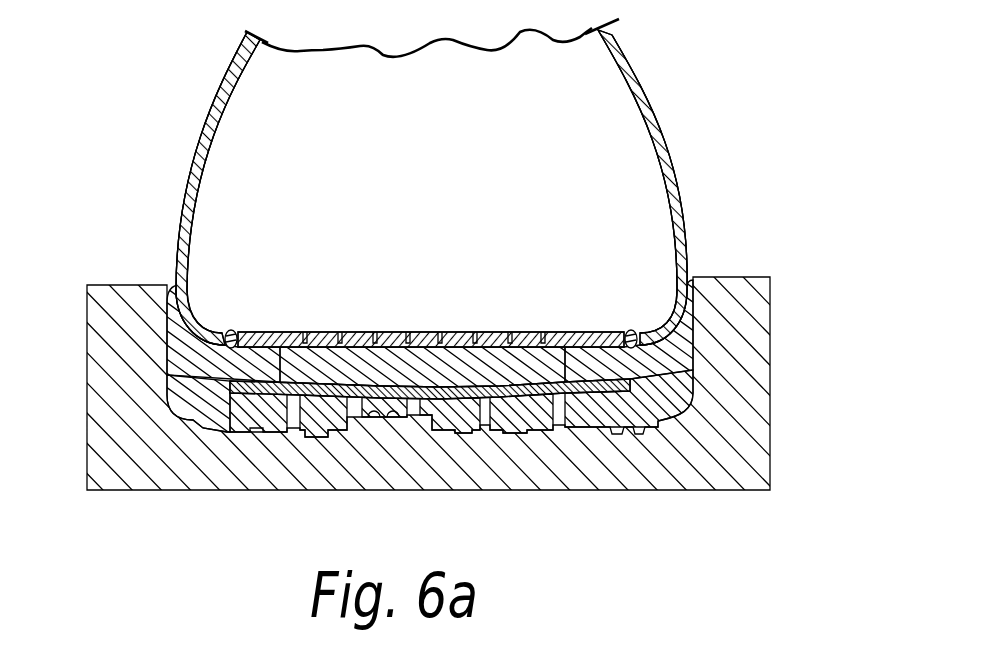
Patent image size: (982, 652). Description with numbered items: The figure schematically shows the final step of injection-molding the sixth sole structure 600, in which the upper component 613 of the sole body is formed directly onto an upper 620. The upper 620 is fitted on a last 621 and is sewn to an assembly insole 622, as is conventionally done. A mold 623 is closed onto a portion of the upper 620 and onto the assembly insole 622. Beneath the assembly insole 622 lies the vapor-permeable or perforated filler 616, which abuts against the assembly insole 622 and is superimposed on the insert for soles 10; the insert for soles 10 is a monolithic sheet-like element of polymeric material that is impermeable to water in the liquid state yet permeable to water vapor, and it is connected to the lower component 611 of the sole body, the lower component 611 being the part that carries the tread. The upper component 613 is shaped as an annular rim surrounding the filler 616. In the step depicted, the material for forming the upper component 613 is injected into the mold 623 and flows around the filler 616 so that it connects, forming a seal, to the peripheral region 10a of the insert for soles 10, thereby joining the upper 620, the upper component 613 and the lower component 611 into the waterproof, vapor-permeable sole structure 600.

The insert for soles 10 is at (428, 400).
The peripheral region of the insert for soles 10a is at (255, 382).
The sixth sole structure 600 is at (467, 326).
The lower component 611 is at (680, 432).
The upper component 613 is at (696, 318).
The filler 616 is at (510, 372).
The upper 620 is at (674, 110).
The last 621 is at (460, 182).
The assembly insole 622 is at (564, 332).
The mold 623 is at (113, 285).